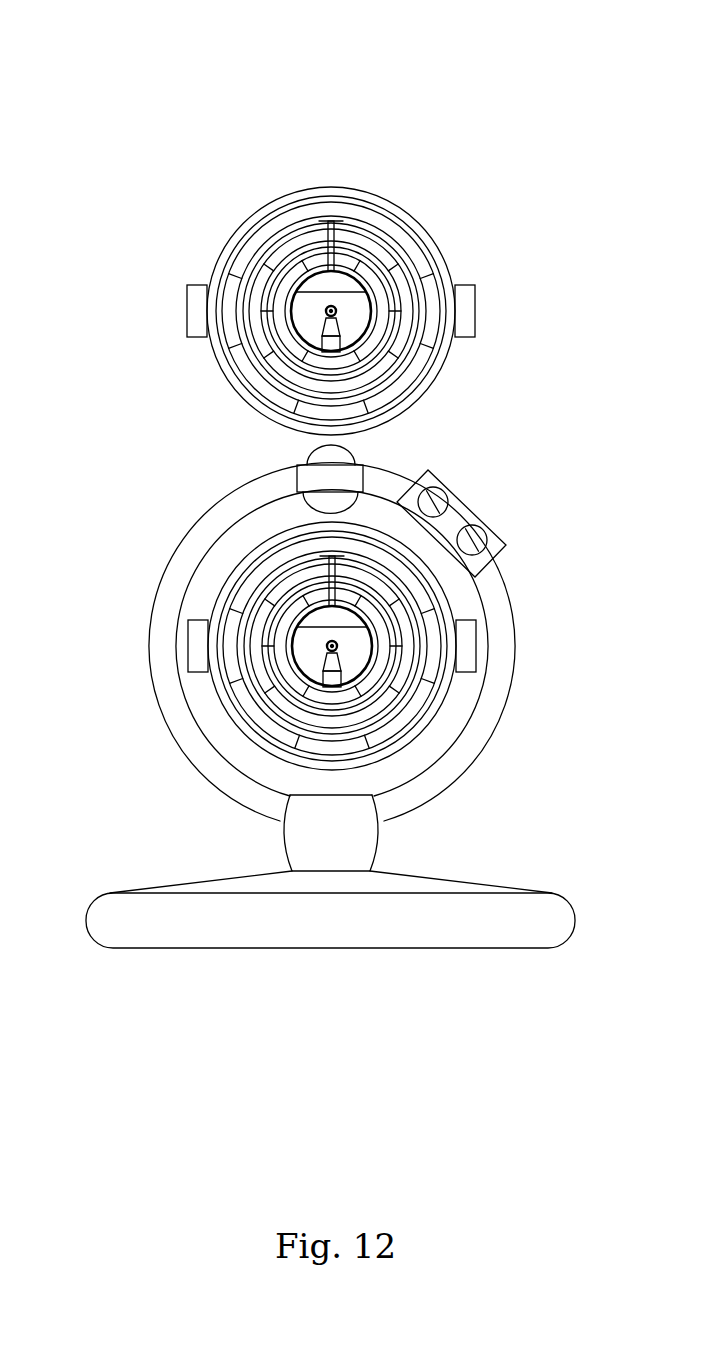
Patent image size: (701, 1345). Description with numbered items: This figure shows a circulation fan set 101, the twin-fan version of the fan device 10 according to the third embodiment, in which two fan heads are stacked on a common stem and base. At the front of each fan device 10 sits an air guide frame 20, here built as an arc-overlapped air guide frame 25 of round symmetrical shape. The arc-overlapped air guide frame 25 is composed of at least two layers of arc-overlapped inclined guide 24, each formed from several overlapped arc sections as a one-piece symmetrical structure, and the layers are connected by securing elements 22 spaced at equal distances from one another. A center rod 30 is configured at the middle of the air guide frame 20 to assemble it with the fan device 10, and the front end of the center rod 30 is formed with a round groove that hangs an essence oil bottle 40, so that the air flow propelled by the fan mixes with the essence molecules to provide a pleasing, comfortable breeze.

The fan device 10 is at (334, 145).
The circulation fan set 101 is at (145, 317).
The air guide frame 20 is at (408, 232).
The securing elements 22 is at (327, 242).
The arc-overlapped inclined guide 24 is at (267, 280).
The arc-overlapped air guide frame 25 is at (408, 385).
The center rod 30 is at (325, 318).
The essence oil bottle 40 is at (330, 345).